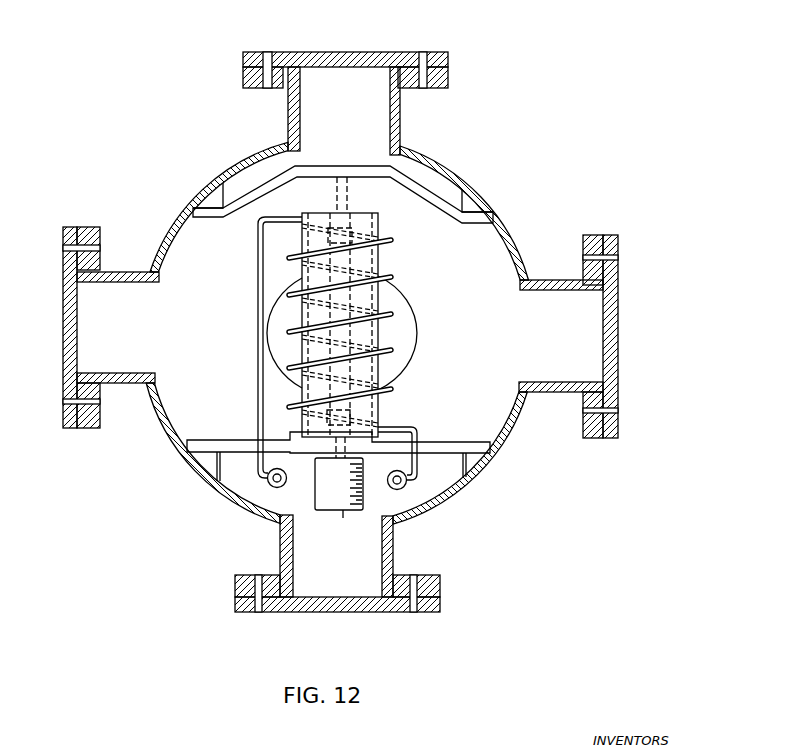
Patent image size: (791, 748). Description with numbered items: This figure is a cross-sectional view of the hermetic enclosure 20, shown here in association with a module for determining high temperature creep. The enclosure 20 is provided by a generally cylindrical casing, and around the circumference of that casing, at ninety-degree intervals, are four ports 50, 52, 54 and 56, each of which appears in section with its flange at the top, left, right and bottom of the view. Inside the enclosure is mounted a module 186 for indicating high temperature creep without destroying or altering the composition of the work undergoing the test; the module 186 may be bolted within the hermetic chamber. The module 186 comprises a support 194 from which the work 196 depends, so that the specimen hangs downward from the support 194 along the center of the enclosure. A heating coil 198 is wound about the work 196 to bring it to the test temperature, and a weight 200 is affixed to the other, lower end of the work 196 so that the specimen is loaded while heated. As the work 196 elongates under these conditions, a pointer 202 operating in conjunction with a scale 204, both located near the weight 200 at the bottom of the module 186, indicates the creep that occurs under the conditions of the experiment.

The hermetic enclosure 20 is at (477, 176).
The port 50 is at (88, 227).
The port 52 is at (356, 50).
The port 54 is at (620, 293).
The port 56 is at (366, 612).
The module 186 is at (437, 442).
The support 194 is at (323, 170).
The work 196 is at (345, 296).
The heating coil 198 is at (387, 308).
The weight 200 is at (347, 510).
The pointer 202 is at (363, 463).
The scale 204 is at (355, 478).